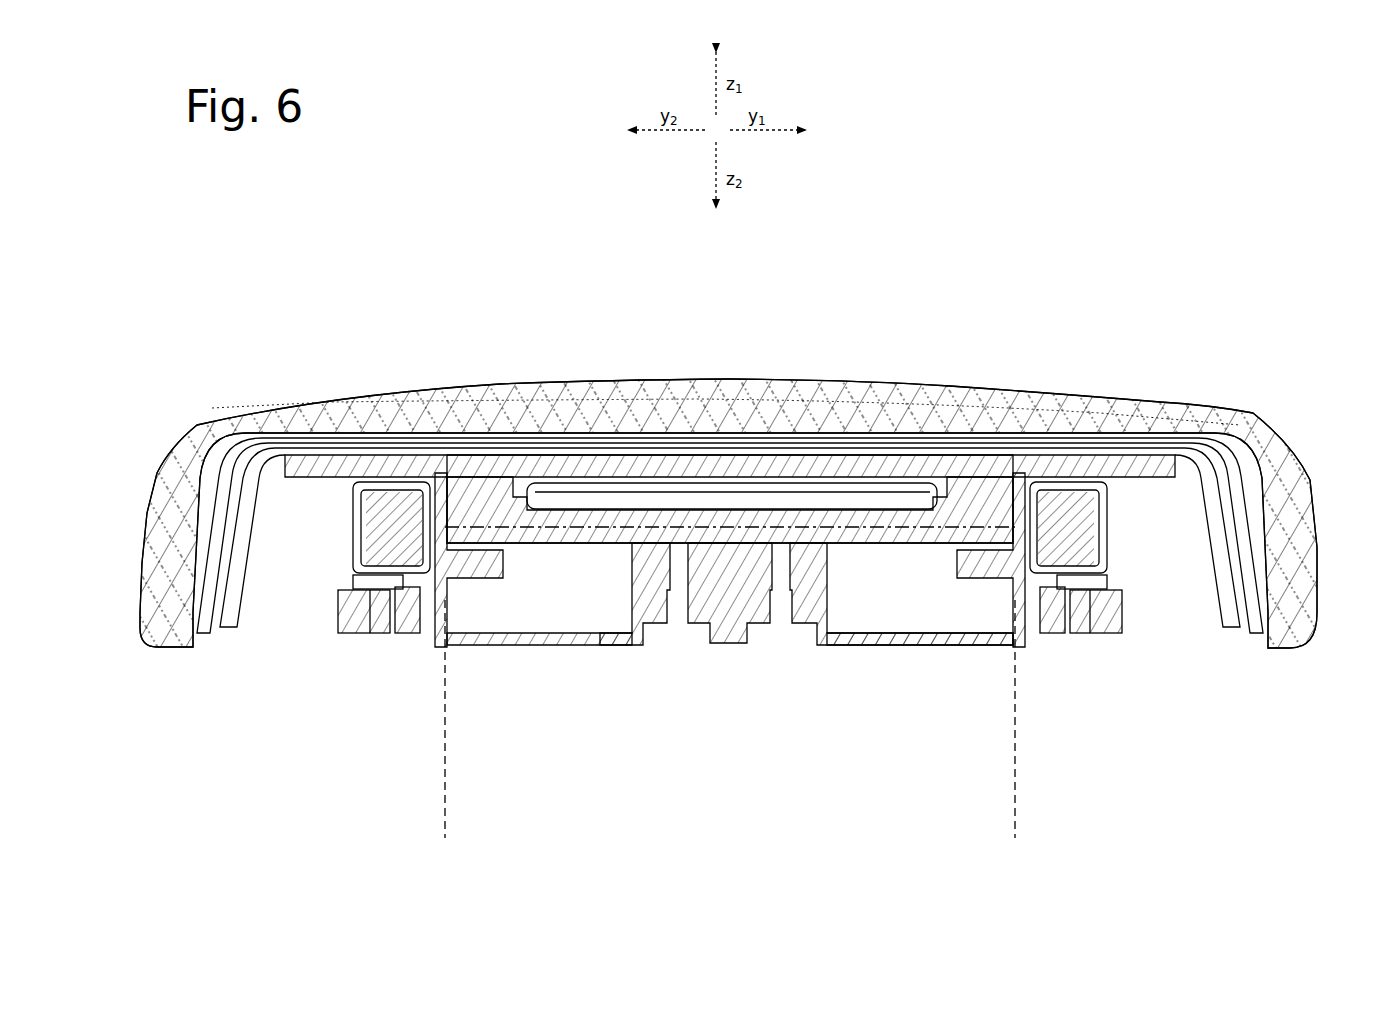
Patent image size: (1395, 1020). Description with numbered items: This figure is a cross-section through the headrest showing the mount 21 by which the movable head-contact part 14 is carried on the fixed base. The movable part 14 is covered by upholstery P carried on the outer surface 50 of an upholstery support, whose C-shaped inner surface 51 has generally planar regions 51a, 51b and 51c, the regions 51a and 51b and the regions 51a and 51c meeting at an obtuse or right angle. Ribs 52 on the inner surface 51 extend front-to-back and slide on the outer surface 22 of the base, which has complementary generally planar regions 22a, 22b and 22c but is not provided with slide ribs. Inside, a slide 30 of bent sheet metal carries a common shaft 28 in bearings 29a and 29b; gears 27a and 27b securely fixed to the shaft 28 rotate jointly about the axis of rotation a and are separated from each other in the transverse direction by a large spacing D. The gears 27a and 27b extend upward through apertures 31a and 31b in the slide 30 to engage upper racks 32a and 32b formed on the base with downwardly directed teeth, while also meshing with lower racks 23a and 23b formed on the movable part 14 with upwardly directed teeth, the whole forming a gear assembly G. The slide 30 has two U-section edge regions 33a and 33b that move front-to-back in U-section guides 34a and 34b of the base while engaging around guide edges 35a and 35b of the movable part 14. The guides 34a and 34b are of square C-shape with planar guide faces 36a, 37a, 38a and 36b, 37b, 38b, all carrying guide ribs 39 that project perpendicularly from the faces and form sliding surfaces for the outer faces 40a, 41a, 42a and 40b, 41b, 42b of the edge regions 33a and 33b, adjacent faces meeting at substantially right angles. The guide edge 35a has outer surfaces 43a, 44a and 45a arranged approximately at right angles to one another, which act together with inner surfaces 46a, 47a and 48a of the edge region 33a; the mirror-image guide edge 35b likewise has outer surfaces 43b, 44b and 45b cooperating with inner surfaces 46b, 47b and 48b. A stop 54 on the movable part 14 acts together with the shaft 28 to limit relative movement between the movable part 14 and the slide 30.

The movable head-contact part 14 is at (780, 398).
The mount 21 is at (412, 705).
The outer surface of the base 22 is at (745, 470).
The sliding surface 22a is at (890, 470).
The sliding surface 22b is at (240, 520).
The sliding surface 22c is at (1245, 580).
The lower rack 23a is at (530, 560).
The lower rack 23b is at (955, 560).
The gear 27a is at (508, 580).
The gear 27b is at (985, 560).
The shaft 28 is at (660, 647).
The bearing 29a is at (545, 557).
The bearing 29b is at (920, 555).
The slide 30 is at (660, 490).
The aperture 31a is at (527, 475).
The aperture 31b is at (912, 478).
The upper rack 32a is at (478, 478).
The upper rack 32b is at (965, 483).
The U-section edge region 33a is at (352, 500).
The U-section edge region 33b is at (1100, 500).
The U-section guide 34a is at (353, 617).
The U-section guide 34b is at (1123, 570).
The guide edge 35a is at (407, 540).
The guide edge 35b is at (1000, 545).
The guide face 36a is at (385, 488).
The guide face 36b is at (1062, 495).
The guide face 37a is at (363, 540).
The guide face 37b is at (1108, 527).
The guide face 38a is at (387, 590).
The guide face 38b is at (1073, 592).
The guide rib 39 is at (378, 478).
The outer face 40a is at (433, 487).
The outer face 40b is at (1085, 492).
The outer face 41a is at (360, 567).
The outer face 41b is at (1107, 513).
The outer face 42a is at (415, 595).
The outer face 42b is at (1090, 600).
The outer surface 43a is at (430, 495).
The outer surface 43b is at (1003, 475).
The outer surface 44a is at (330, 490).
The outer surface 44b is at (1135, 485).
The outer surface 45a is at (460, 575).
The outer surface 45b is at (1050, 562).
The inner surface 46a is at (445, 482).
The inner surface 46b is at (1013, 482).
The inner surface 47a is at (363, 520).
The inner surface 47b is at (1105, 540).
The inner surface 48a is at (357, 567).
The inner surface 48b is at (1040, 542).
The outer surface of upholstery support 50 is at (700, 480).
The inner surface of upholstery support 51 is at (718, 448).
The planar region 51a is at (620, 455).
The planar region 51b is at (230, 547).
The planar region 51c is at (1240, 520).
The rib 52 is at (245, 480).
The stop 54 is at (727, 640).
The upholstery P is at (870, 440).
The axis of rotation a is at (810, 650).
The gear assembly G is at (727, 612).
The spacing D is at (447, 827).